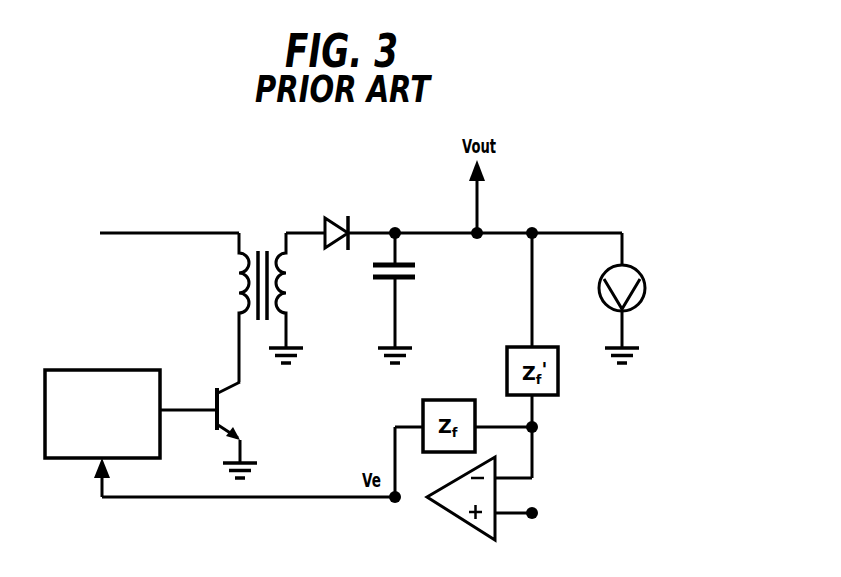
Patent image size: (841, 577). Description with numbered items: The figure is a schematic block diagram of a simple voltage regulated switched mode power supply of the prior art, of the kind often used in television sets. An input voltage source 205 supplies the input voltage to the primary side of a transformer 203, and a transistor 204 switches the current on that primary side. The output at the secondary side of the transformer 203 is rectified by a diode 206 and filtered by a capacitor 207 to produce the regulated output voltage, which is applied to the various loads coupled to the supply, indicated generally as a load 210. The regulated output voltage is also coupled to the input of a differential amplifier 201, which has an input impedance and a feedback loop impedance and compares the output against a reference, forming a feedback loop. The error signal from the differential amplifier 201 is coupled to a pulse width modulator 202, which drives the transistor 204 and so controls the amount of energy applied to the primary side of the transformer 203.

The differential amplifier 201 is at (446, 508).
The pulse width modulator 202 is at (128, 370).
The transformer 203 is at (258, 249).
The transistor 204 is at (226, 400).
The input voltage source 205 is at (117, 236).
The diode 206 is at (332, 247).
The capacitor 207 is at (373, 263).
The load 210 is at (640, 272).